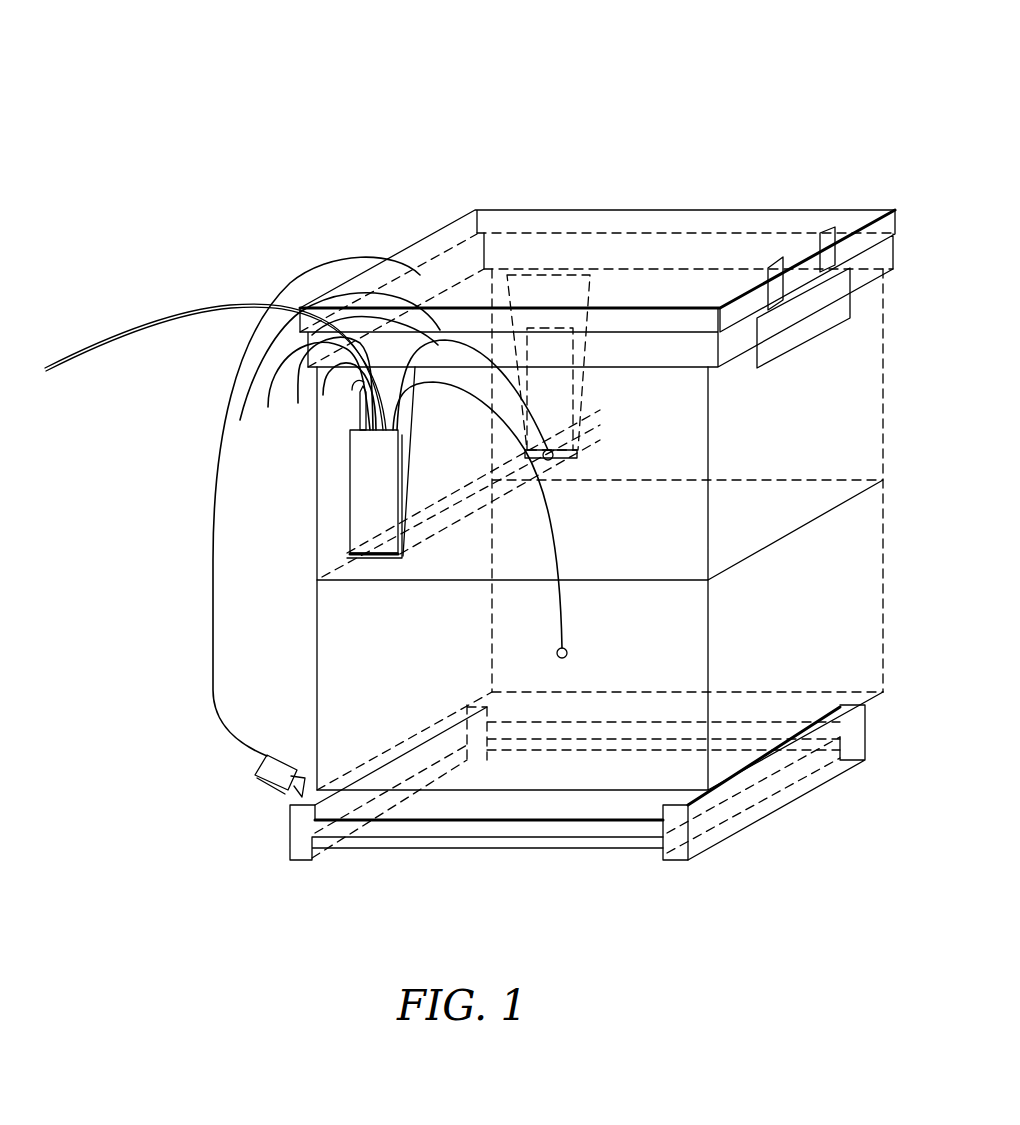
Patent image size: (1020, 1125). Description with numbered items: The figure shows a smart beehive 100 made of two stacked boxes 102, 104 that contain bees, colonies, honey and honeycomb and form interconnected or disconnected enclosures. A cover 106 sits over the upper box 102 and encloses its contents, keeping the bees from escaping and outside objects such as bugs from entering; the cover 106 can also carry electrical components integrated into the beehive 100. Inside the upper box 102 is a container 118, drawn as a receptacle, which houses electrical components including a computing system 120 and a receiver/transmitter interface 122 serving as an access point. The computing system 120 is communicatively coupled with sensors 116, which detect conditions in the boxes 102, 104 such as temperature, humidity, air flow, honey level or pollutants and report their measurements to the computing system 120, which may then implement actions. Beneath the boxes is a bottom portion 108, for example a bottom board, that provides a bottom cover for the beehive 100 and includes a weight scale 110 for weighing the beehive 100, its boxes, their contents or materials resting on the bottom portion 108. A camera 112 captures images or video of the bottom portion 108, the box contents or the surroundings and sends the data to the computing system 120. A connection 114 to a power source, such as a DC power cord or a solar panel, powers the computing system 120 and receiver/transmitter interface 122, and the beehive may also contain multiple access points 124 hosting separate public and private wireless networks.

The smart beehive 100 is at (446, 102).
The box 102 is at (710, 517).
The box 104 is at (710, 637).
The cover 106 is at (677, 250).
The bottom portion 108 is at (680, 862).
The weight scale 110 is at (488, 850).
The camera 112 is at (275, 756).
The connection to a power source 114 is at (152, 312).
The sensors 116 is at (575, 447).
The container 118 is at (412, 465).
The computing system 120 is at (367, 505).
The receiver/transmitter interface 122 is at (357, 402).
The access points 124 is at (817, 320).